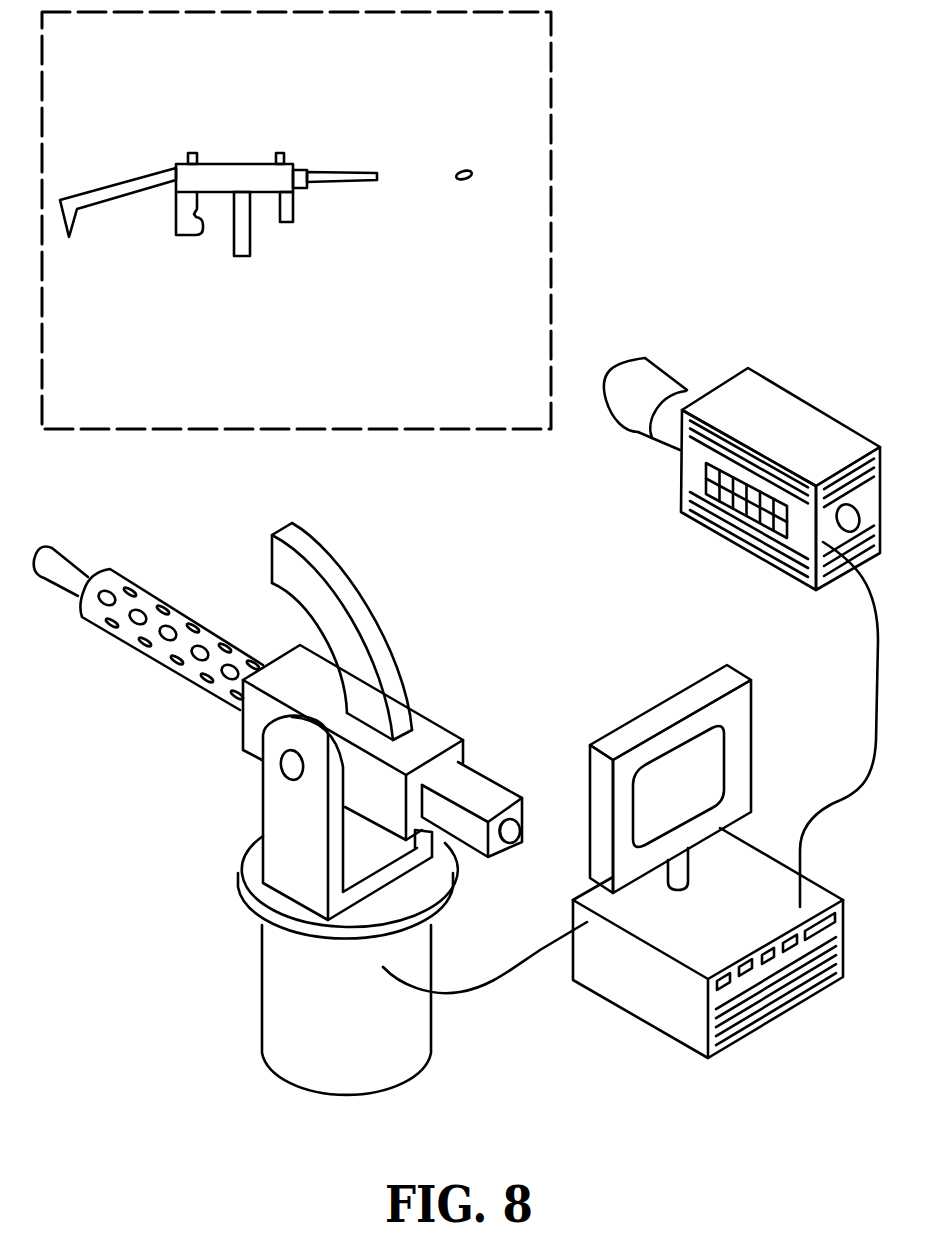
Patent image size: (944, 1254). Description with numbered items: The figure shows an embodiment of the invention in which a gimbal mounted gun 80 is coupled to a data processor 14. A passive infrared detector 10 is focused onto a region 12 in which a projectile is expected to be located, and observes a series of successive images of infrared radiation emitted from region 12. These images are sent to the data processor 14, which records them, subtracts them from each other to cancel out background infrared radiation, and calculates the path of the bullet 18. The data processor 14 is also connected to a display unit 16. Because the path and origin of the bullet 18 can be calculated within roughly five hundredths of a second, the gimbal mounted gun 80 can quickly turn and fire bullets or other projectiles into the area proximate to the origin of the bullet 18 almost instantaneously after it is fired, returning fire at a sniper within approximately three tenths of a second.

The passive infrared detector 10 is at (797, 417).
The region 12 is at (161, 66).
The data processor 14 is at (627, 983).
The display unit 16 is at (702, 769).
The bullet 18 is at (470, 172).
The gimbal mounted gun 80 is at (253, 717).